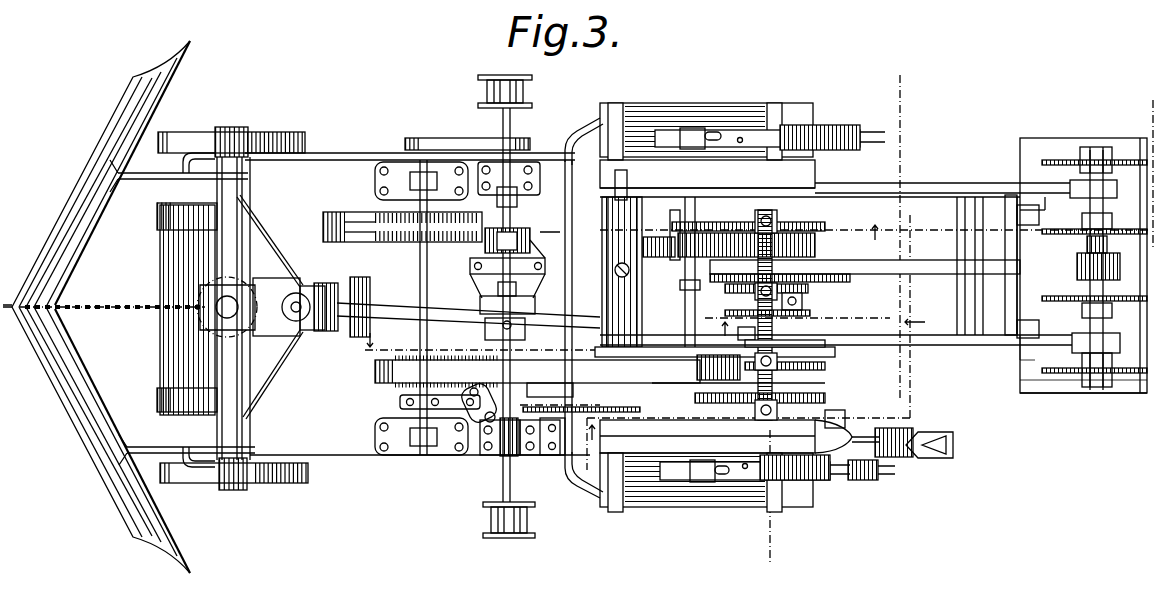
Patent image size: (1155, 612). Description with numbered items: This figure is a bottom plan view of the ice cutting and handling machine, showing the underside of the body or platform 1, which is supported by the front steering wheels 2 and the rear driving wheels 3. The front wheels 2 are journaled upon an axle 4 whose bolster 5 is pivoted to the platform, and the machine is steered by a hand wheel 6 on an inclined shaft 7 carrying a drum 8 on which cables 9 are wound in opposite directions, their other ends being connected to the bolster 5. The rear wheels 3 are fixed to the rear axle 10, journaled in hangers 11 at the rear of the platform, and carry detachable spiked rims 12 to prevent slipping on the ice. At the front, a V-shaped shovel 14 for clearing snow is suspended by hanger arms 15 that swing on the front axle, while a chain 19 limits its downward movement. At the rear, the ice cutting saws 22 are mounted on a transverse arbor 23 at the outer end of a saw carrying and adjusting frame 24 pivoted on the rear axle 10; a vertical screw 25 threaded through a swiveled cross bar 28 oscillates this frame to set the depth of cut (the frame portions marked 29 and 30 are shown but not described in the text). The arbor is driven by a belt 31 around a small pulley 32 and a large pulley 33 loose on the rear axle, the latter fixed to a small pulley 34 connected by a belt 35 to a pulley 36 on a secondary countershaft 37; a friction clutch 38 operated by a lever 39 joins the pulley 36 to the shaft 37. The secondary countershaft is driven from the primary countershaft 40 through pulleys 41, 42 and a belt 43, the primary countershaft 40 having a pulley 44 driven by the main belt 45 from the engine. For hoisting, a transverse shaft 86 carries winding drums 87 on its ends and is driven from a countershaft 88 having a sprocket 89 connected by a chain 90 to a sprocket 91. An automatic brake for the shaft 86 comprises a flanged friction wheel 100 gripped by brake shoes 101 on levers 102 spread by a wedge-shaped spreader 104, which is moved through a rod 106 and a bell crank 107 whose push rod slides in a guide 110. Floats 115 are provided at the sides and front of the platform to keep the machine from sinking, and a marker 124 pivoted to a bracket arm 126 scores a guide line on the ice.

The body or platform 1 is at (403, 306).
The front steering wheels 2 is at (262, 138).
The rear driving wheels 3 is at (725, 128).
The axle 4 is at (1150, 140).
The bolster 5 is at (220, 262).
The hand wheel 6 is at (672, 232).
The shaft 7 is at (390, 312).
The drum 8 is at (312, 290).
The cables 9 is at (272, 242).
The rear axle 10 is at (818, 186).
The brackets or hangers 11 is at (800, 172).
The spiked rims 12 is at (810, 130).
The V-shaped shovel or plow 14 is at (72, 198).
The hanger arms 15 is at (150, 175).
The chain 19 is at (128, 310).
The ice cutting saws 22 is at (1060, 240).
The transverse arbor 23 is at (1098, 214).
The saw carrying and adjusting frame 24 is at (990, 345).
The screw 25 is at (626, 275).
The cross bar 28 is at (630, 322).
The plate 29 is at (1124, 385).
The post 30 is at (1017, 322).
The belt 31 is at (937, 274).
The small pulley 32 is at (1080, 278).
The large pulley 33 is at (815, 285).
The small pulley 34 is at (810, 225).
The belt 35 is at (745, 238).
The pulley 36 is at (688, 222).
The secondary countershaft 37 is at (700, 215).
The friction clutch 38 is at (650, 258).
The lever 39 is at (700, 285).
The primary countershaft 40 is at (490, 238).
The pulley 41 is at (685, 380).
The pulley 42 is at (404, 358).
The belt 43 is at (410, 378).
The pulley 44 is at (400, 240).
The belt 45 is at (355, 222).
The transverse shaft 86 is at (512, 210).
The winding drums 87 is at (526, 88).
The countershaft 88 is at (565, 347).
The sprocket 89 is at (548, 458).
The chain 90 is at (632, 410).
The sprocket 91 is at (803, 480).
The flanged friction wheel 100 is at (495, 225).
The brake shoes 101 is at (498, 265).
The levers 102 is at (490, 304).
The wedge-shaped spreader 104 is at (490, 330).
The rod or link 106 is at (449, 403).
The bell crank 107 is at (475, 435).
The guide 110 is at (490, 458).
The floats 115 is at (172, 355).
The marker 124 is at (937, 458).
The bracket arm 126 is at (860, 482).